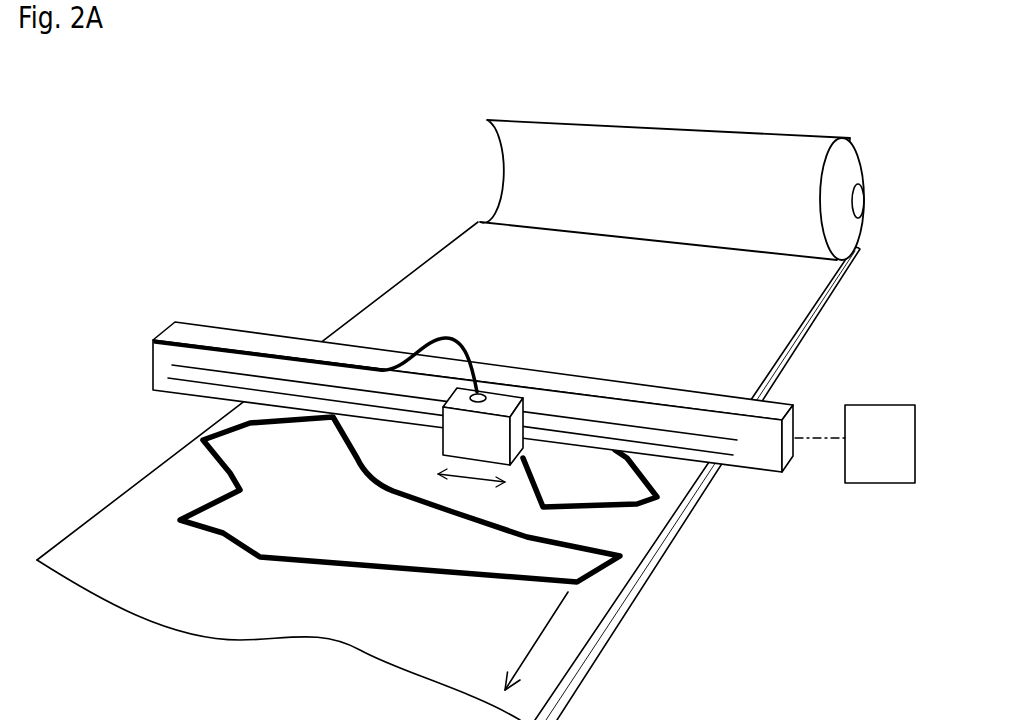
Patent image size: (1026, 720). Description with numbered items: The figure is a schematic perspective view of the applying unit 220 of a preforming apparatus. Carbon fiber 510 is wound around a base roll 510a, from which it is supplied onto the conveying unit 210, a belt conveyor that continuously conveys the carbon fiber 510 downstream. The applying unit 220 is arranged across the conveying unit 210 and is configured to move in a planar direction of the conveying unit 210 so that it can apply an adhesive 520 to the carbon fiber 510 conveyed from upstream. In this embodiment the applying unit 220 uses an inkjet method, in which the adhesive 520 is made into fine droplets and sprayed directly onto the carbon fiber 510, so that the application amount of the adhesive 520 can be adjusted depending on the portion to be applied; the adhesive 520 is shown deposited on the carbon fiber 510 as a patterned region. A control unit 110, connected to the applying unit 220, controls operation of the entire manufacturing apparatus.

The control unit 110 is at (885, 425).
The conveying unit 210 is at (673, 542).
The applying unit 220 is at (258, 348).
The carbon fiber 510 is at (545, 666).
The base roll 510a is at (642, 142).
The adhesive 520 is at (380, 557).